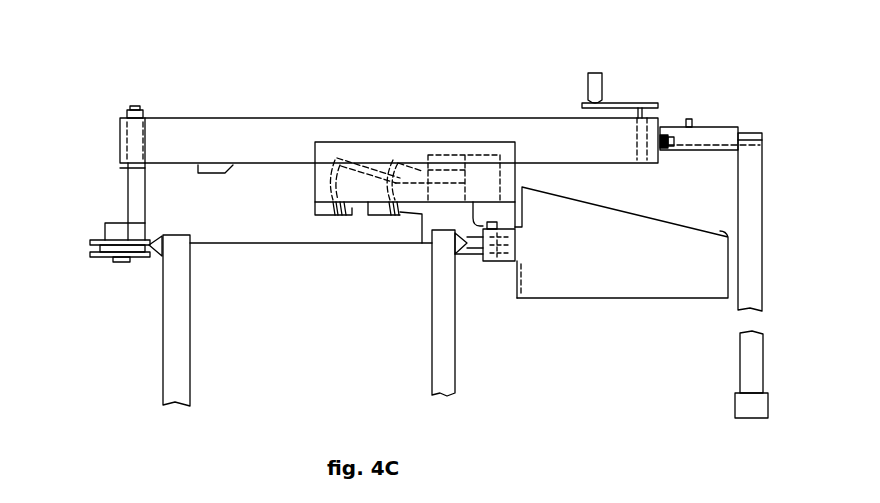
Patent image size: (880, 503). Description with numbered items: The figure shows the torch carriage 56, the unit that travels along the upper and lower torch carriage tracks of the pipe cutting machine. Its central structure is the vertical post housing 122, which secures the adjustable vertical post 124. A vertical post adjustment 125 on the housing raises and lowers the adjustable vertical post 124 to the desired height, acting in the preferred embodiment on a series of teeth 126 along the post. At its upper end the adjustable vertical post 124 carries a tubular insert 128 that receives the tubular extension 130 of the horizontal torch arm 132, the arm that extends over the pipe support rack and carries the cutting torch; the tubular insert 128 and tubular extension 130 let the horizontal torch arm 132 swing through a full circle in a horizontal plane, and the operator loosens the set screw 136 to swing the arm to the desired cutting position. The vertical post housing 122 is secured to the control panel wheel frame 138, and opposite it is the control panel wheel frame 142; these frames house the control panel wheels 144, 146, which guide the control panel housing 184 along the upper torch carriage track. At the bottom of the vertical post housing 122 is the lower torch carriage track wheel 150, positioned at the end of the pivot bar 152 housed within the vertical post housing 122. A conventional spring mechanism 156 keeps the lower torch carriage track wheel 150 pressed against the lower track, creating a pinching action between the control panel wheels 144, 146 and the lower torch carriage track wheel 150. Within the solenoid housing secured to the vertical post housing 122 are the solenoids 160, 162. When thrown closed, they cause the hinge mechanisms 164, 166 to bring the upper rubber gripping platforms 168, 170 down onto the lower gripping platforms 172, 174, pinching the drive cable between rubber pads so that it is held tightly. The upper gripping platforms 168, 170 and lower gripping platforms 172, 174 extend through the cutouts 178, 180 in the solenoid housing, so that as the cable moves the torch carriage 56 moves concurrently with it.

The torch carriage 56 is at (222, 55).
The vertical post housing 122 is at (560, 138).
The adjustable vertical post 124 is at (702, 152).
The vertical post adjustment 125 is at (612, 100).
The teeth 126 is at (664, 148).
The tubular insert 128 is at (708, 137).
The tubular extension 130 is at (747, 134).
The horizontal torch arm 132 is at (750, 253).
The set screw 136 is at (685, 121).
The control panel wheel frame 138 is at (508, 263).
The control panel wheel frame 142 is at (477, 165).
The control panel wheel 144 is at (466, 258).
The control panel wheel 146 is at (481, 262).
The lower torch carriage track wheel 150 is at (88, 253).
The pivot bar 152 is at (140, 190).
The spring mechanism 156 is at (178, 165).
The solenoid 160 is at (490, 150).
The solenoid 162 is at (435, 158).
The hinge mechanism 164 is at (397, 162).
The hinge mechanism 166 is at (352, 157).
The upper gripping platform 168 is at (422, 243).
The upper gripping platform 170 is at (353, 215).
The lower gripping platform 172 is at (390, 217).
The lower gripping platform 174 is at (338, 218).
The cutout 178 is at (375, 215).
The cutout 180 is at (318, 212).
The control panel housing 184 is at (597, 262).